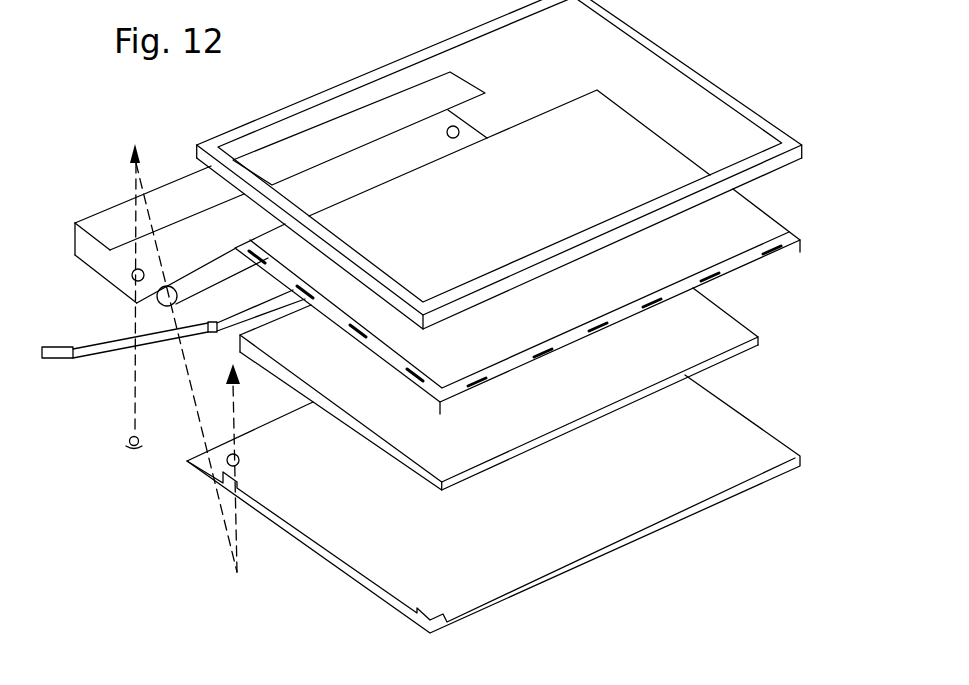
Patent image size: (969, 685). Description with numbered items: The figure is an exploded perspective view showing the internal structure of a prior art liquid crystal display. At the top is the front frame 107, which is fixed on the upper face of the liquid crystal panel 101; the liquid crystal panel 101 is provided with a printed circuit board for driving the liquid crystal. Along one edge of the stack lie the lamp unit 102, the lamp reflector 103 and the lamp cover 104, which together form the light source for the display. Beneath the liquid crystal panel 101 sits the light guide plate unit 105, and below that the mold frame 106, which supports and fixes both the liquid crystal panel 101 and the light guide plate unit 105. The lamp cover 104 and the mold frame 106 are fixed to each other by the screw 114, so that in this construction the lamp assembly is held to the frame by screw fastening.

The liquid crystal panel 101 is at (728, 242).
The lamp unit 102 is at (185, 338).
The lamp reflector 103 is at (158, 291).
The lamp cover 104 is at (123, 218).
The light guide plate unit 105 is at (718, 345).
The mold frame 106 is at (792, 462).
The front frame 107 is at (800, 148).
The screw 114 is at (137, 459).